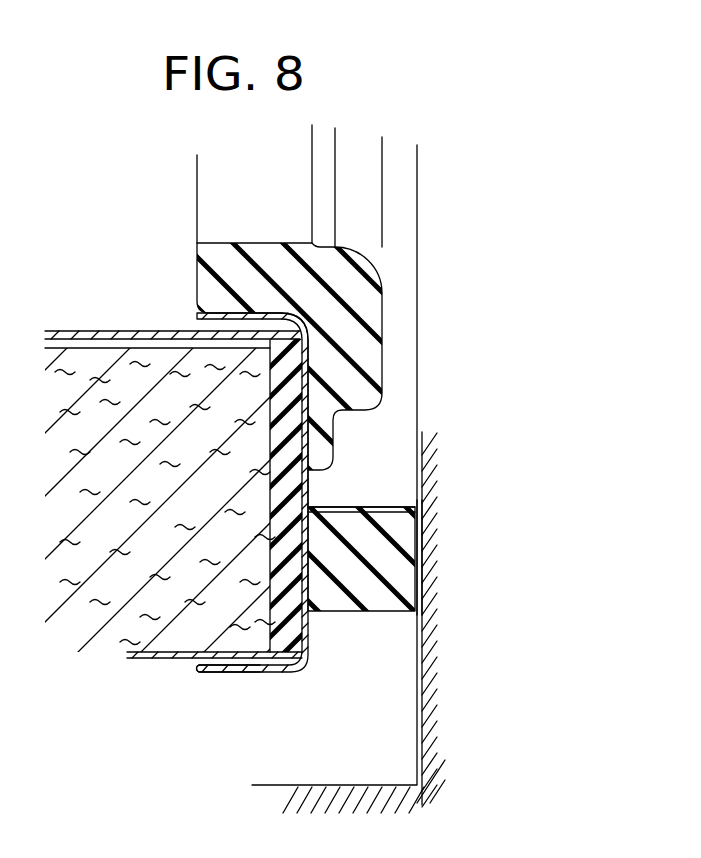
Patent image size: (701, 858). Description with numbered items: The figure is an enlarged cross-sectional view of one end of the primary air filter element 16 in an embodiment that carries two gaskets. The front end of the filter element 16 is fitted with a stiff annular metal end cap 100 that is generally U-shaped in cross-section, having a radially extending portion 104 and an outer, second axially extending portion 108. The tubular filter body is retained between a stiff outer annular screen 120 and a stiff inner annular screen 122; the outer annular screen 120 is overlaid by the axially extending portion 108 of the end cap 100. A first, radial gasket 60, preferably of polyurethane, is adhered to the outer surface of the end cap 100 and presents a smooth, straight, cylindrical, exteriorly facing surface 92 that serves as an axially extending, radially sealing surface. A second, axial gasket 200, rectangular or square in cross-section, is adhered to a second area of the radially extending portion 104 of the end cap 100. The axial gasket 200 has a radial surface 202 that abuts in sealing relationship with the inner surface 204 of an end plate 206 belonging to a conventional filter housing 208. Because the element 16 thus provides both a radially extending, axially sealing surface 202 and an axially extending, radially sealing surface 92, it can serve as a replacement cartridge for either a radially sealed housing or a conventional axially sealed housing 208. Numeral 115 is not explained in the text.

The exteriorly facing surface 92 is at (213, 183).
The radial gasket 60 is at (214, 281).
The inner annular screen 122 is at (90, 331).
The primary air filter element 16 is at (197, 513).
The gasket strip 115 is at (270, 568).
The metal end cap 100 is at (310, 632).
The radially extending portion 104 is at (310, 488).
The axial gasket 200 is at (400, 586).
The inner surface 204 is at (409, 520).
The radial surface 202 is at (422, 548).
The end plate 206 is at (449, 477).
The filter housing 208 is at (418, 734).
The outer annular screen 120 is at (156, 658).
The second axially extending portion 108 is at (233, 673).